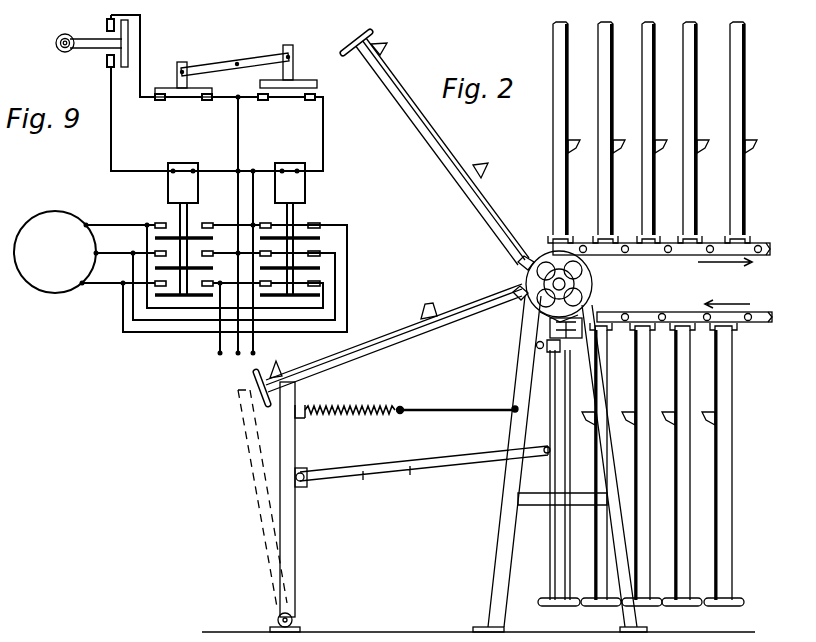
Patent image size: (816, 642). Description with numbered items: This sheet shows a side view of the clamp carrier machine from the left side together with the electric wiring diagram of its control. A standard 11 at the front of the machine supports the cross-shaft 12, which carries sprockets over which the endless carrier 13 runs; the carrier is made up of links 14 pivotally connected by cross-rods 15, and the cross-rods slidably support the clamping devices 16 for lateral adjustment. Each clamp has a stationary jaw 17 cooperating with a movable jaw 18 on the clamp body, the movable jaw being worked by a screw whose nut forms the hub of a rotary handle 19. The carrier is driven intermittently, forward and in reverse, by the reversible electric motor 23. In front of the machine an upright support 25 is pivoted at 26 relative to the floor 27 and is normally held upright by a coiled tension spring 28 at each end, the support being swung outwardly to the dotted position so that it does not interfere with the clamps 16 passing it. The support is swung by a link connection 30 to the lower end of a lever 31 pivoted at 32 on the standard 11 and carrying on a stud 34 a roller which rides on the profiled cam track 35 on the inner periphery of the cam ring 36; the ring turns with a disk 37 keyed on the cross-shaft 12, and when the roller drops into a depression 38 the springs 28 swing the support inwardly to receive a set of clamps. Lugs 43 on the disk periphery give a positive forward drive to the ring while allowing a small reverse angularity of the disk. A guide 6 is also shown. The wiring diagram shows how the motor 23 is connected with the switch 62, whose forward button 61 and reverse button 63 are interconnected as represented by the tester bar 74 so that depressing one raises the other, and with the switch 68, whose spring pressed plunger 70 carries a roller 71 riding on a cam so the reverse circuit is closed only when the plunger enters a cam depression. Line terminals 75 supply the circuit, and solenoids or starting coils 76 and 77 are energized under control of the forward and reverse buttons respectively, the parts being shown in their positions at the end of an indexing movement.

In FIG. 2, the guide 6 is at (546, 240).
In FIG. 2, the standard 11 is at (502, 521).
In FIG. 2, the cross-shaft 12 is at (605, 290).
In FIG. 2, the endless carrier 13 is at (683, 258).
In FIG. 2, the links 14 is at (687, 313).
In FIG. 2, the cross-rods 15 is at (760, 325).
In FIG. 2, the clamping devices 16 is at (493, 213).
In FIG. 2, the stationary jaw 17 is at (279, 365).
In FIG. 2, the movable jaw 18 is at (428, 303).
In FIG. 2, the rotary handle 19 is at (252, 375).
In FIG. 9, the reversible electric motor 23 is at (55, 294).
In FIG. 2, the upright support 25 is at (283, 512).
In FIG. 2, the pivot 26 is at (293, 617).
In FIG. 2, the floor 27 is at (362, 632).
In FIG. 2, the coiled tension spring 28 is at (362, 405).
In FIG. 2, the link connection 30 is at (438, 470).
In FIG. 2, the lever 31 is at (545, 428).
In FIG. 2, the pivot 32 is at (538, 344).
In FIG. 2, the stud 34 is at (514, 292).
In FIG. 2, the profiled cam track 35 is at (566, 278).
In FIG. 2, the cam ring 36 is at (594, 287).
In FIG. 2, the disk 37 is at (521, 263).
In FIG. 2, the depression 38 is at (545, 320).
In FIG. 2, the lugs 43 is at (594, 327).
In FIG. 9, the starting button 61 is at (288, 89).
In FIG. 9, the switch 62 is at (211, 60).
In FIG. 9, the reverse button 63 is at (181, 99).
In FIG. 9, the switch 68 is at (128, 40).
In FIG. 9, the spring pressed plunger 70 is at (99, 49).
In FIG. 9, the roller 71 is at (54, 37).
In FIG. 9, the tester bar 74 is at (250, 60).
In FIG. 9, the line terminals 75 is at (218, 353).
In FIG. 9, the solenoid 76 is at (305, 187).
In FIG. 9, the solenoid 77 is at (168, 187).